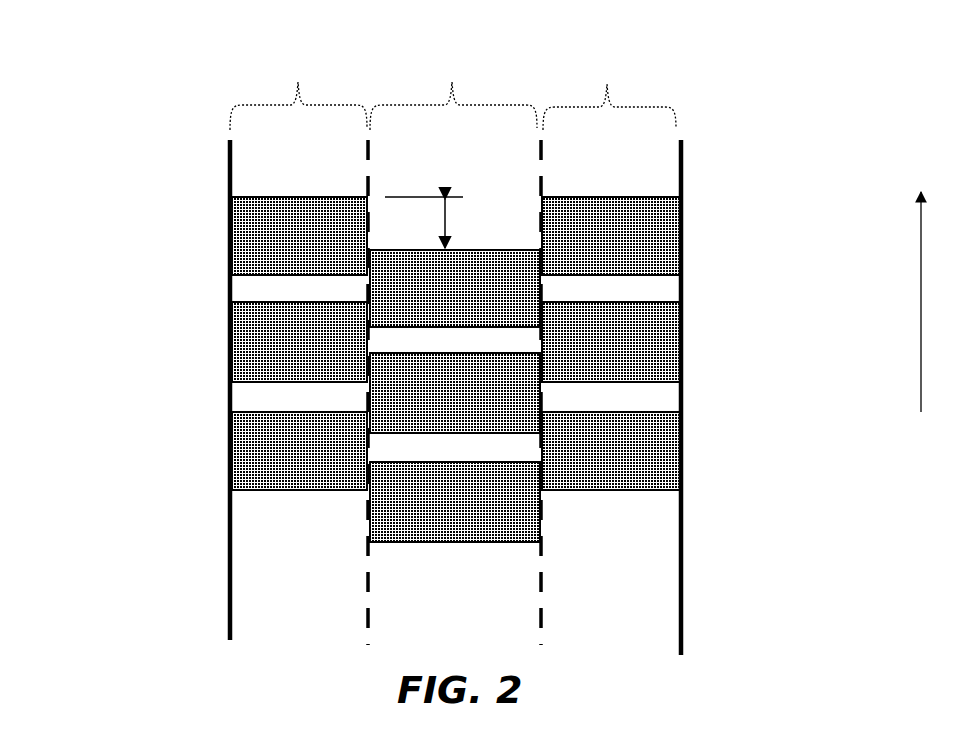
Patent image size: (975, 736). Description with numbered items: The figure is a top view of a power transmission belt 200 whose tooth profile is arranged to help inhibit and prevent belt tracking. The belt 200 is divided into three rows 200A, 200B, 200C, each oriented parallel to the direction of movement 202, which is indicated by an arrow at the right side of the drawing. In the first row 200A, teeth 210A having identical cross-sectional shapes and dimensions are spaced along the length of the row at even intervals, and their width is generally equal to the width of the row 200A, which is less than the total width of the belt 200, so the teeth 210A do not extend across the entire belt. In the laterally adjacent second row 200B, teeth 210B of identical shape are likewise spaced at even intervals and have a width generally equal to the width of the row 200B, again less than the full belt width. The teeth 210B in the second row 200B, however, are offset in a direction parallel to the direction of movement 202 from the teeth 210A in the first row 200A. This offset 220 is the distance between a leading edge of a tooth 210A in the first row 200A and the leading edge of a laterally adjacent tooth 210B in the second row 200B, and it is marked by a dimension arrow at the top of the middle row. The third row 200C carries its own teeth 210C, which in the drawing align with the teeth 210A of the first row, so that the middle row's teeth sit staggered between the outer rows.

The power transmission belt 200 is at (146, 72).
The first row 200A is at (298, 87).
The second row 200B is at (453, 88).
The third row 200C is at (609, 88).
The direction of movement 202 is at (920, 262).
The teeth of first row 210A is at (275, 338).
The teeth of second row 210B is at (490, 505).
The teeth of third row 210C is at (650, 443).
The offset 220 is at (445, 225).